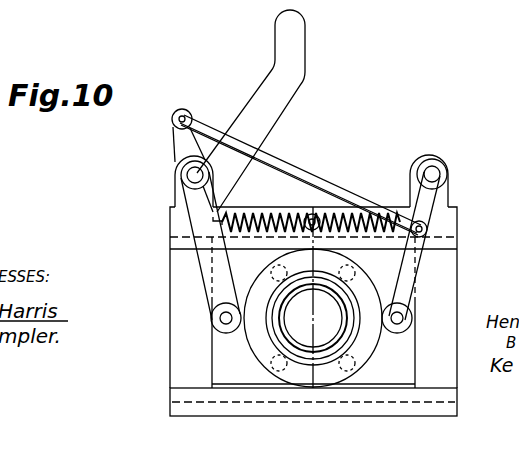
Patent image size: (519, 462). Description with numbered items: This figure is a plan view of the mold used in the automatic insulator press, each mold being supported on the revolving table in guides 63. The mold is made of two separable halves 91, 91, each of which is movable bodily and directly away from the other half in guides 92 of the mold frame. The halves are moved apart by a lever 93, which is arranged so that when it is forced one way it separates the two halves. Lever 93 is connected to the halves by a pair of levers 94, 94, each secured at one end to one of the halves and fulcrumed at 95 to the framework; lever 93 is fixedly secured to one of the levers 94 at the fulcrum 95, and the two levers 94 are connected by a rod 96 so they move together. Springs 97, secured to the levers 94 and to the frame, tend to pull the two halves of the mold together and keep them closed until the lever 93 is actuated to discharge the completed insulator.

The guides 63 is at (447, 404).
The separable halves 91 is at (311, 318).
The guides 92 is at (176, 247).
The lever 93 is at (290, 77).
The levers 94 is at (196, 202).
The fulcrum 95 is at (195, 175).
The rod 96 is at (314, 177).
The springs 97 is at (280, 213).